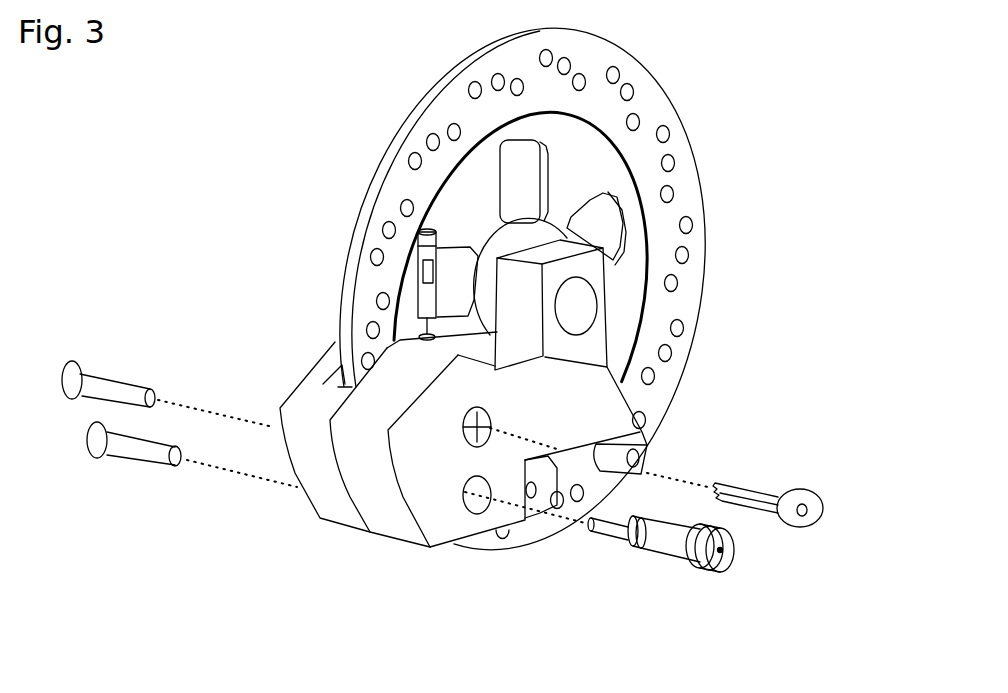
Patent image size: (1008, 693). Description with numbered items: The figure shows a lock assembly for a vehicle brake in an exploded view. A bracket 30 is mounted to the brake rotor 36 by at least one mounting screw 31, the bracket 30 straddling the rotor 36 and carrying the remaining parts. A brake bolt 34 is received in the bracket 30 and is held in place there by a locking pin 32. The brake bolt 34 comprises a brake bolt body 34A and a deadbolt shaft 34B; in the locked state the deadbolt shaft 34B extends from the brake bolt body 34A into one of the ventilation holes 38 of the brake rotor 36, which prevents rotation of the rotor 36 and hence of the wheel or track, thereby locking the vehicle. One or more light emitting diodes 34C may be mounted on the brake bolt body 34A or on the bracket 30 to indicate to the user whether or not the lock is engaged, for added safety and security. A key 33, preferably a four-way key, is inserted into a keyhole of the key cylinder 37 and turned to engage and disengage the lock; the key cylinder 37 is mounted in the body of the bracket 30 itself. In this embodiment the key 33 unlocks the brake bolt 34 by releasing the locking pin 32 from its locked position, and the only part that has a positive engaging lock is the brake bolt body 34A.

The bracket 30 is at (570, 425).
The mounting screw 31 is at (162, 455).
The locking pin 32 is at (423, 295).
The key 33 is at (787, 518).
The brake bolt 34 is at (667, 583).
The brake bolt body 34A is at (660, 540).
The deadbolt shaft 34B is at (612, 527).
The light emitting diodes 34C is at (733, 586).
The brake rotor 36 is at (650, 107).
The key cylinder 37 is at (468, 443).
The ventilation hole 38 is at (473, 88).